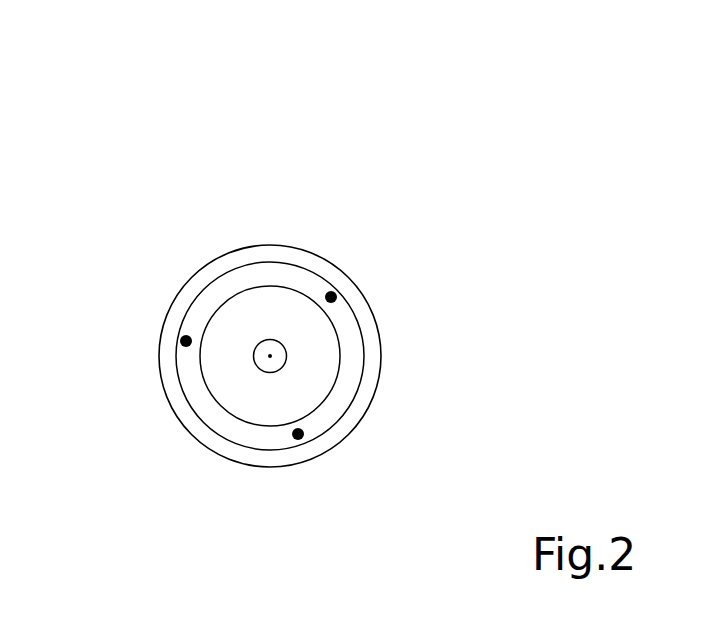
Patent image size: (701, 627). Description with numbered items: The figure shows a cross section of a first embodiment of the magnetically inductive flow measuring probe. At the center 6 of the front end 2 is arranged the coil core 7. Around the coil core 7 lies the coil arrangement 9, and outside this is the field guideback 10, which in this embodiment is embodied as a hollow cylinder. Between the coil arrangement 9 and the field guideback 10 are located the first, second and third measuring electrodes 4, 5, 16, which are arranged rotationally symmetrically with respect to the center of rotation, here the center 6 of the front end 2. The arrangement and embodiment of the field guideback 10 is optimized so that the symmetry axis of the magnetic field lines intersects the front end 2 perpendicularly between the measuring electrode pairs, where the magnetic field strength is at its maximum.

The front end 2 is at (200, 438).
The first measuring electrode 4 is at (334, 295).
The second measuring electrode 5 is at (189, 338).
The center 6 is at (272, 353).
The coil core 7 is at (281, 356).
The coil arrangement 9 is at (313, 400).
The field guideback 10 is at (260, 278).
The third measuring electrode 16 is at (300, 437).